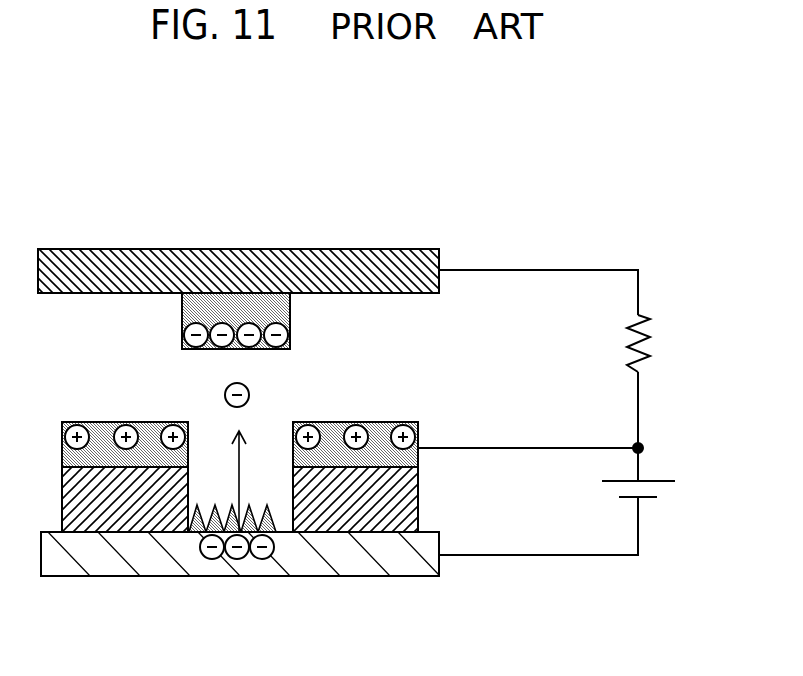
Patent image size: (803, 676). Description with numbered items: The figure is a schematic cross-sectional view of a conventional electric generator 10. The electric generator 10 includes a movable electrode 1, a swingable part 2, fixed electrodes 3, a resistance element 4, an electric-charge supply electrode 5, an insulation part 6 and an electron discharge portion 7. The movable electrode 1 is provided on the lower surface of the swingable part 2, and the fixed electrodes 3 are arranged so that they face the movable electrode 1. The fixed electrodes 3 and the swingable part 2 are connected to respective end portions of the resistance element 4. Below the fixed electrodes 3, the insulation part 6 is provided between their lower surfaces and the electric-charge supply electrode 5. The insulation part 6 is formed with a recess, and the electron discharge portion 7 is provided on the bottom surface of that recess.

The electric generator 10 is at (440, 188).
The movable electrode 1 is at (227, 305).
The swingable part 2 is at (323, 260).
The fixed electrodes 3 is at (97, 433).
The resistance element 4 is at (657, 347).
The electric-charge supply electrode 5 is at (395, 567).
The insulation part 6 is at (348, 520).
The electron discharge portion 7 is at (294, 590).